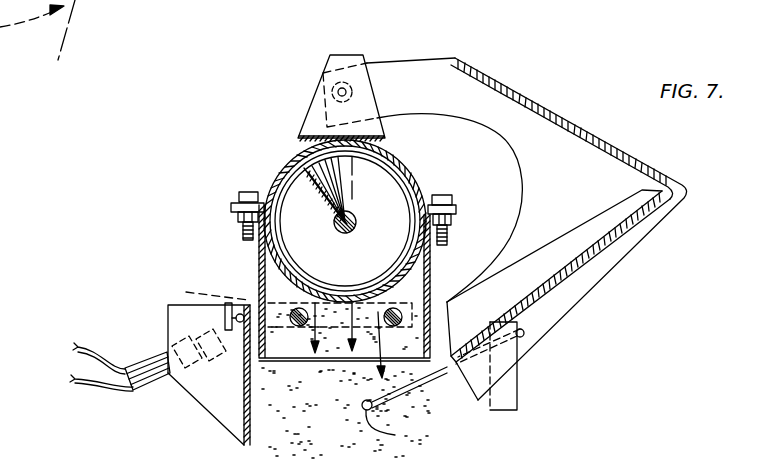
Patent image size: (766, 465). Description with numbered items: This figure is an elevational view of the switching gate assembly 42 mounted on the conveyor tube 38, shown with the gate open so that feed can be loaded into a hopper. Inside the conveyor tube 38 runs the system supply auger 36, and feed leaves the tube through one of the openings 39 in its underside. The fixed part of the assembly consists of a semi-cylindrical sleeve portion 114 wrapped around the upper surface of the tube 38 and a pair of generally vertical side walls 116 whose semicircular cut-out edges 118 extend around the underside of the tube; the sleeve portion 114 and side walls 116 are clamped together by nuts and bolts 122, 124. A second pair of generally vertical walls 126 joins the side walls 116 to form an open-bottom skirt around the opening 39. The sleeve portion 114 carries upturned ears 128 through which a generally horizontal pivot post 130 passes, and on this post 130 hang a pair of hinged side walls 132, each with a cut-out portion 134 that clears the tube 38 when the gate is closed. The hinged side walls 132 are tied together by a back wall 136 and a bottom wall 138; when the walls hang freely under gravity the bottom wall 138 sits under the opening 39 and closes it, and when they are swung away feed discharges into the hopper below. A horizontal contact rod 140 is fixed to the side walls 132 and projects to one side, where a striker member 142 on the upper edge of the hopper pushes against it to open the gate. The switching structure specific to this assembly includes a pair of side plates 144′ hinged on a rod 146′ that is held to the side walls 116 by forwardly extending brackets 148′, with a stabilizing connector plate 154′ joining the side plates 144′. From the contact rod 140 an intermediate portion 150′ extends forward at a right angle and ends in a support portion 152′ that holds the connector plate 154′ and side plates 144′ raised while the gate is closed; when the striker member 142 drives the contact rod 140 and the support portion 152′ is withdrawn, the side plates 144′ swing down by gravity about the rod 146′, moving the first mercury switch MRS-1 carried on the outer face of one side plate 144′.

The gate assembly 42 is at (228, 145).
The upturned ears 128 is at (343, 58).
The pivot post 130 is at (347, 91).
The cut-out portion 134 is at (494, 137).
The side walls 132 is at (582, 202).
The back wall 136 is at (506, 95).
The bottom wall 138 is at (569, 270).
The contact rod 140 is at (527, 333).
The striker member 142 is at (517, 373).
The semi-cylindrical sleeve portion 114 is at (392, 156).
The system supply auger 36 is at (315, 181).
The conveyor tube 38 is at (272, 223).
The side walls 116 is at (268, 265).
The second pair of vertical walls 126 is at (259, 277).
The semicircular cut-out edges 118 is at (341, 240).
The openings 39 is at (340, 297).
The bolts 124 is at (246, 191).
The nuts 122 is at (237, 215).
The side plates 144′ is at (246, 398).
The stabilizing connector plate 154′ is at (240, 414).
The rod 146′ is at (236, 318).
The brackets 148′ is at (194, 293).
The first mercury switch MRS-1 is at (143, 386).
The intermediate portion 150′ is at (417, 387).
The support portion 152′ is at (403, 429).